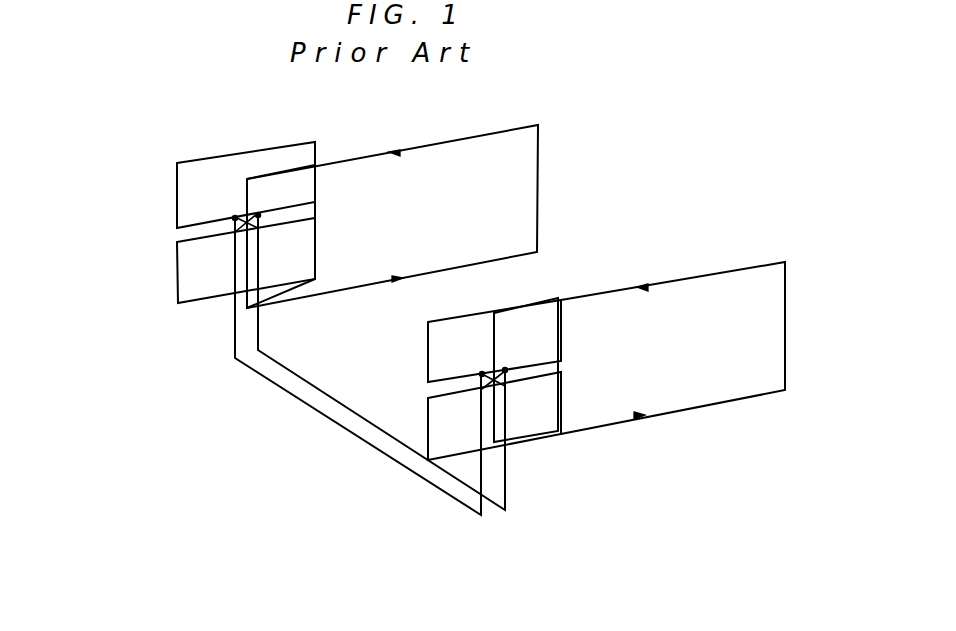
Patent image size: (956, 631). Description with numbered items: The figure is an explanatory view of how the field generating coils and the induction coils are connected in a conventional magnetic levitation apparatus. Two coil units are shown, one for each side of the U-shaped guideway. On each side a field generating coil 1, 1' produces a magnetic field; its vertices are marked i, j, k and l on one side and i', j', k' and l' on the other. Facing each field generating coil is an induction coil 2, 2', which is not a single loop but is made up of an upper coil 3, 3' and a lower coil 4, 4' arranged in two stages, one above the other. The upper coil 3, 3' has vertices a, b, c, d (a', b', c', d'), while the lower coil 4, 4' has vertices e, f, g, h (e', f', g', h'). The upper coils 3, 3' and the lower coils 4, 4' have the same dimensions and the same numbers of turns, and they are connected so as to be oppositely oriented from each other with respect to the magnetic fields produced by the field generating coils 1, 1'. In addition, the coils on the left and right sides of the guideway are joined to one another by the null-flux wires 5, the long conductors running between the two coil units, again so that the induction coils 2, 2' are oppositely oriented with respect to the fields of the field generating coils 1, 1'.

The field generating coil 1 is at (677, 344).
The field generating coil 1' is at (399, 210).
The induction coil 2 is at (517, 388).
The induction coil 2' is at (271, 232).
The upper coil 3 is at (494, 323).
The upper coil 3' is at (246, 167).
The lower coil 4 is at (494, 442).
The lower coil 4' is at (246, 287).
The null-flux wires 5 is at (278, 381).